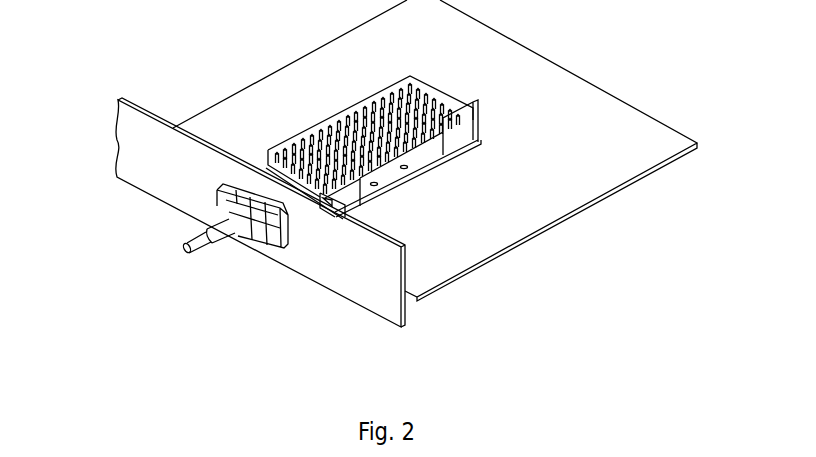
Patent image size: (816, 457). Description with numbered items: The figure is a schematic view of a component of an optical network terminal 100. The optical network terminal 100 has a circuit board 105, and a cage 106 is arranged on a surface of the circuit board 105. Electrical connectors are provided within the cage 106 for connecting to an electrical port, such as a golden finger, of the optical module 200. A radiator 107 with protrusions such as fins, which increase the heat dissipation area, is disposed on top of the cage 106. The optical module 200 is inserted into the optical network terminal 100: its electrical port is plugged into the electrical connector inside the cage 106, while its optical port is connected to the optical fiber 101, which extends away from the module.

The optical network terminal 100 is at (227, 60).
The optical fiber 101 is at (205, 232).
The circuit board 105 is at (457, 252).
The cage 106 is at (420, 157).
The radiator 107 is at (340, 115).
The optical module 200 is at (282, 243).